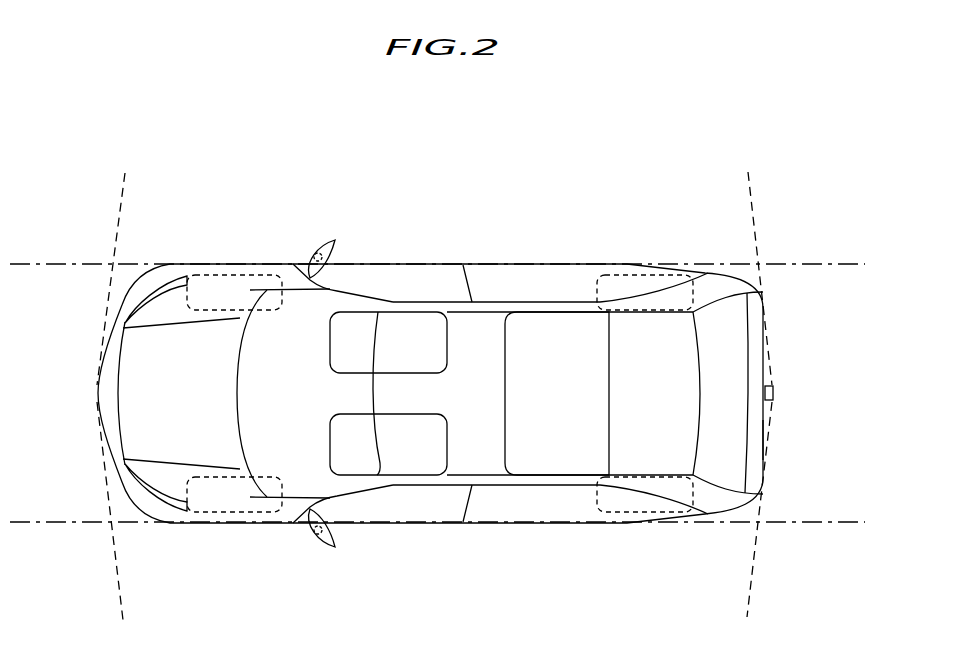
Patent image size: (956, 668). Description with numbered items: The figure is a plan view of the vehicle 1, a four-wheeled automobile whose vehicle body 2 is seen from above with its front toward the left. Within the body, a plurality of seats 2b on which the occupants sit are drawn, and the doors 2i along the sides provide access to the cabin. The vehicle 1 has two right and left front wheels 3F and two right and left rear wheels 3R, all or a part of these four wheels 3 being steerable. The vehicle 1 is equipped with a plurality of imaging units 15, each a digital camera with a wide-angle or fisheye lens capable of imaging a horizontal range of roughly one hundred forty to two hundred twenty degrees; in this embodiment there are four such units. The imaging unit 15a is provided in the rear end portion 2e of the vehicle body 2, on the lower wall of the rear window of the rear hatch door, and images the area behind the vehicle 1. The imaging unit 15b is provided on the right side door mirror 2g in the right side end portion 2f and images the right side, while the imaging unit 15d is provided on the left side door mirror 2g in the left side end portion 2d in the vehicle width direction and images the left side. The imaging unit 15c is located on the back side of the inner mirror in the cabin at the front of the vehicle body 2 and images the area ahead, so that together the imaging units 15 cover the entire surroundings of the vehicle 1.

The vehicle 1 is at (553, 191).
The vehicle body 2 is at (713, 268).
The seat 2b is at (447, 343).
The left side end portion 2d is at (587, 523).
The rear end portion 2e is at (772, 415).
The right side end portion 2f is at (563, 264).
The side door mirror 2g is at (335, 242).
The door 2i is at (430, 264).
The wheel 3 is at (440, 394).
The front wheel 3F is at (232, 275).
The rear wheel 3R is at (638, 275).
The imaging unit 15 is at (460, 397).
The imaging unit 15a is at (775, 393).
The imaging unit 15b is at (318, 246).
The imaging unit 15c is at (353, 390).
The imaging unit 15d is at (317, 537).